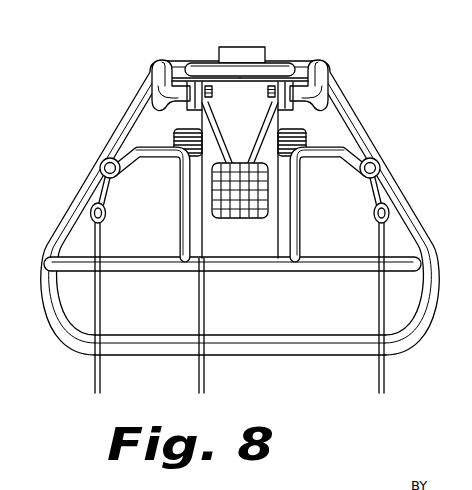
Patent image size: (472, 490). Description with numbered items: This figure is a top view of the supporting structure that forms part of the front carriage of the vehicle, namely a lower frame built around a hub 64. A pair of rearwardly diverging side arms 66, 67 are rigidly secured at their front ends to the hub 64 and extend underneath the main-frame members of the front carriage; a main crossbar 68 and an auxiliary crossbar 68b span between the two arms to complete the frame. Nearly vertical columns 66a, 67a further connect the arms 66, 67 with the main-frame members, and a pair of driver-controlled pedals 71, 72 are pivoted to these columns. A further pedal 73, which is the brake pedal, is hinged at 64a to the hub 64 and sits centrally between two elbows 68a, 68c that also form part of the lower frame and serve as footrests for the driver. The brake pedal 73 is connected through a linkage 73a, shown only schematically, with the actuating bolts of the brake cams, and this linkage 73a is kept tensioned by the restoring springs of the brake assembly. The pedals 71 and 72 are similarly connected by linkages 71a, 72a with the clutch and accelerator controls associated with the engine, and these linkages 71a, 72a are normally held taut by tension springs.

The hub 64 is at (228, 47).
The hinge 64a is at (268, 92).
The side arm 66 is at (113, 127).
The column 66a is at (100, 164).
The side arm 67 is at (364, 126).
The column 67a is at (380, 167).
The main crossbar 68 is at (251, 274).
The elbow 68a is at (157, 174).
The auxiliary crossbar 68b is at (306, 356).
The elbow 68c is at (333, 174).
The pedal 71 is at (175, 134).
The linkage 71a is at (97, 373).
The pedal 72 is at (283, 129).
The linkage 72a is at (384, 391).
The brake pedal 73 is at (236, 219).
The linkage 73a is at (200, 374).